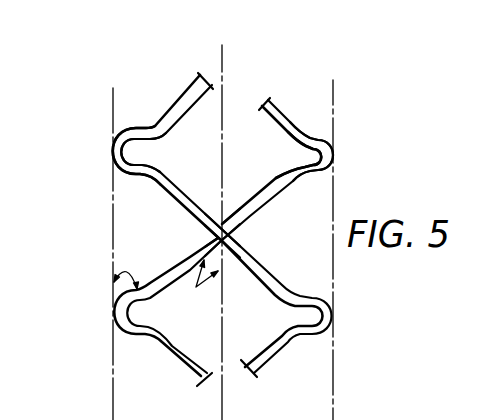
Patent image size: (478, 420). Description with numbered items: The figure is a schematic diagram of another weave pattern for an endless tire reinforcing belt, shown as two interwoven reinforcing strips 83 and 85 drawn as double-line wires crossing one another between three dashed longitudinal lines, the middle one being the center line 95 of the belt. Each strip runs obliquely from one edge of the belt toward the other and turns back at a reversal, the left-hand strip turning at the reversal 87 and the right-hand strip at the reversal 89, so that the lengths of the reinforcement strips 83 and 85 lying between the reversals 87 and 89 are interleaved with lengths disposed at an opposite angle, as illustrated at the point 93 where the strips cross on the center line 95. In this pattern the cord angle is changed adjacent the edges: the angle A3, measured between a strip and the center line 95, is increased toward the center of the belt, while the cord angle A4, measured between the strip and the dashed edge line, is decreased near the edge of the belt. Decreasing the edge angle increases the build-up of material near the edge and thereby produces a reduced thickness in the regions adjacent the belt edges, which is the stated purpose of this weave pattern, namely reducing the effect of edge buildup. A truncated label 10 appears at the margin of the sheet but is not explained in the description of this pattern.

The reinforcing strip 83 is at (186, 211).
The reinforcing strip 85 is at (269, 200).
The reversal 87 is at (113, 152).
The reversal 89 is at (333, 155).
The point 93 is at (222, 221).
The center line 95 is at (222, 88).
The angle A3 is at (196, 287).
The cord angle A4 is at (113, 273).
The stent 10 is at (469, 376).